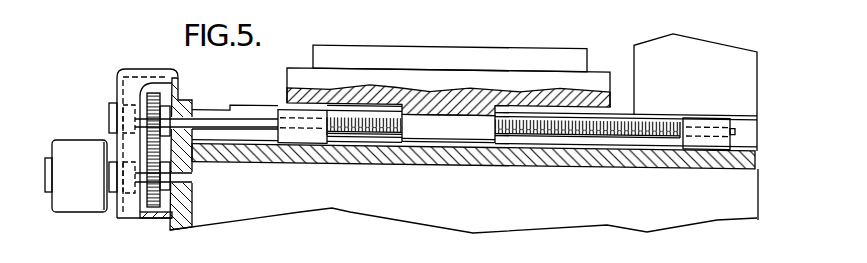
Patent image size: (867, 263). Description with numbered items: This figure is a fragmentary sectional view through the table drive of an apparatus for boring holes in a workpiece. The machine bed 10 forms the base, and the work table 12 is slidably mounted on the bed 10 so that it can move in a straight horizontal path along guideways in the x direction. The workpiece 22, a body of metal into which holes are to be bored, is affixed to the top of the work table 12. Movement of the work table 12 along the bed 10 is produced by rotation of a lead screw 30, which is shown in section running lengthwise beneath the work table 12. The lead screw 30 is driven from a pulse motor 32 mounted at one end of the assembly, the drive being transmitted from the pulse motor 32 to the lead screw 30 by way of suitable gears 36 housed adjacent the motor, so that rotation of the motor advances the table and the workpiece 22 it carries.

The machine bed 10 is at (300, 200).
The work table 12 is at (298, 75).
The workpiece 22 is at (445, 45).
The lead screw 30 is at (552, 132).
The pulse motor 32 is at (95, 180).
The gears 36 is at (150, 150).